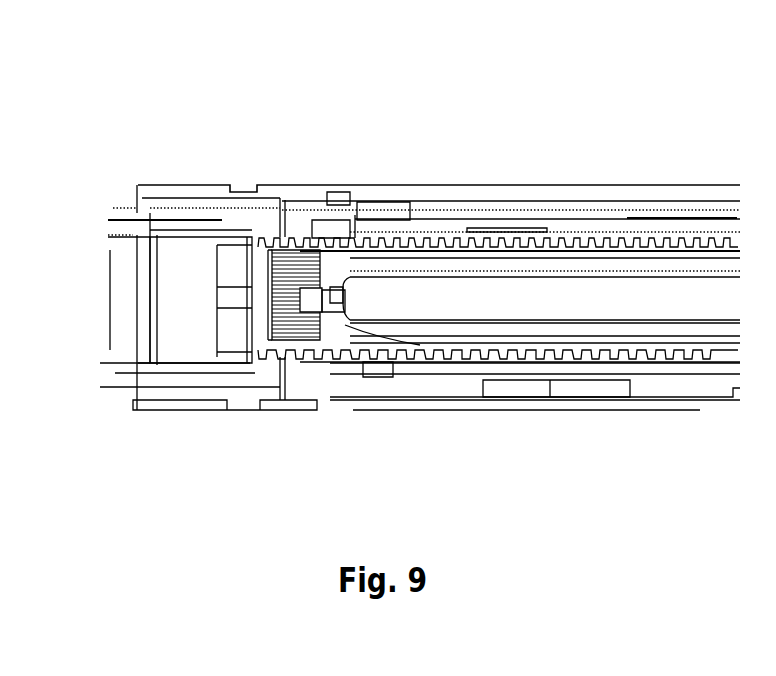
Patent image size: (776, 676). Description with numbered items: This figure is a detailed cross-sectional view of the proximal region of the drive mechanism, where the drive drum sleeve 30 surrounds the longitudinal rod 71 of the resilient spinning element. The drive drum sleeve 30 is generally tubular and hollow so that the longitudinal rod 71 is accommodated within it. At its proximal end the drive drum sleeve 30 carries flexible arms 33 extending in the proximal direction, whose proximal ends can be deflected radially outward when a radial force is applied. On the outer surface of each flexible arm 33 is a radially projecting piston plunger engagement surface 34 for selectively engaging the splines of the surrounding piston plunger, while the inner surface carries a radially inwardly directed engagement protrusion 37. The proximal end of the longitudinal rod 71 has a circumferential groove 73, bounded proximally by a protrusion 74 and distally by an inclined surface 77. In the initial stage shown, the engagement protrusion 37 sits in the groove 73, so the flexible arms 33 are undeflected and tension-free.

The drive drum sleeve 30 is at (670, 267).
The flexible arms 33 is at (397, 323).
The piston plunger engagement surface 34 is at (357, 337).
The engagement protrusion 37 is at (340, 317).
The longitudinal rod 71 is at (520, 287).
The circumferential groove 73 is at (301, 262).
The protrusion 74 is at (293, 335).
The inclined surface 77 is at (403, 283).